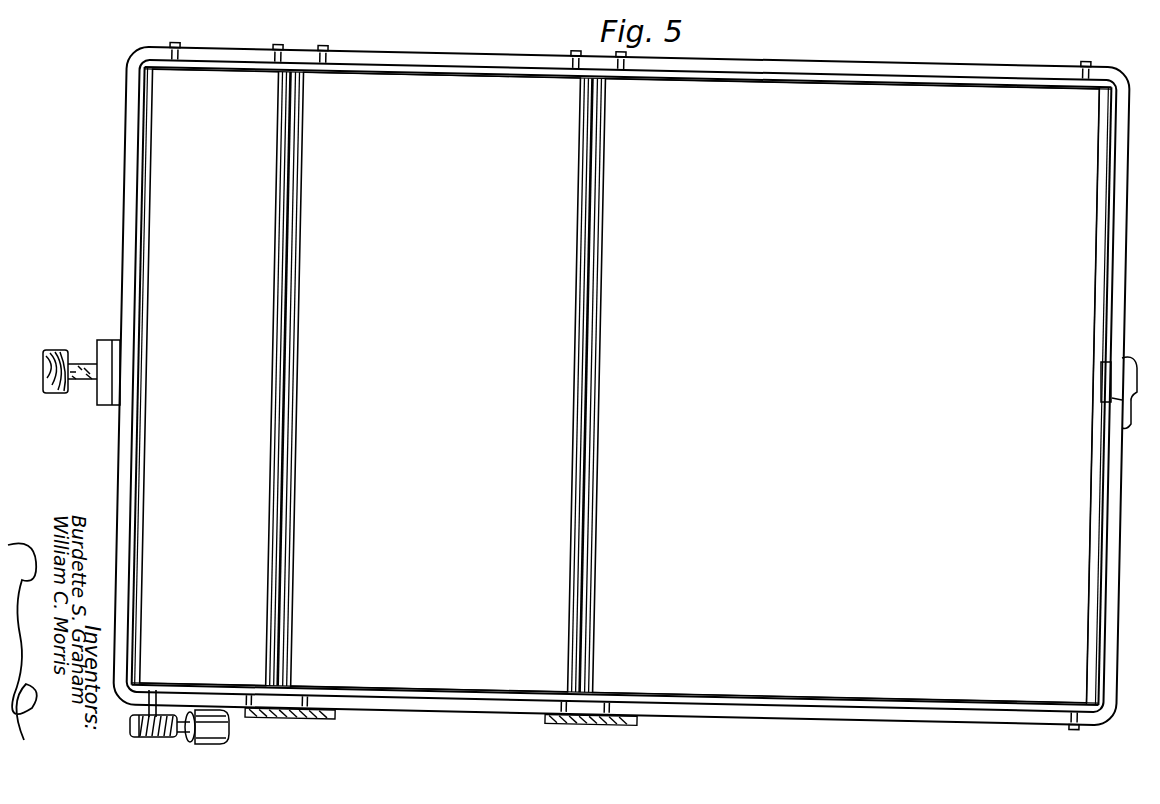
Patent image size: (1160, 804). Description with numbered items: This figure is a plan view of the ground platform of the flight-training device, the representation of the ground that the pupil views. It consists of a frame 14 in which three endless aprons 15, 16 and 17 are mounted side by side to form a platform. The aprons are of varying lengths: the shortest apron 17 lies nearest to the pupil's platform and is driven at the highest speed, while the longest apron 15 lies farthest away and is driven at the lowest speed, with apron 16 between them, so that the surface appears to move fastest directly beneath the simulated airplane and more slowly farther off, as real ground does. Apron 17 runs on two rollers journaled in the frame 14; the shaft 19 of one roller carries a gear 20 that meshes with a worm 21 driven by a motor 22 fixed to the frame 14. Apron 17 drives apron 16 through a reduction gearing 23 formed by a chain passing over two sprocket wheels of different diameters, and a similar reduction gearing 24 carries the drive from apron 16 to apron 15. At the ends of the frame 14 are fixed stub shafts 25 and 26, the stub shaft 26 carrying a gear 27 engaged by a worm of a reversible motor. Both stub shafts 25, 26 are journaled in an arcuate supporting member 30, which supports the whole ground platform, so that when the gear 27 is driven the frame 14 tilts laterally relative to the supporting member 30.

The frame 14 is at (812, 58).
The endless apron 15 is at (846, 391).
The endless apron 16 is at (436, 382).
The endless apron 17 is at (209, 377).
The shaft 19 is at (150, 712).
The gear 20 is at (153, 738).
The worm 21 is at (183, 737).
The motor 22 is at (216, 746).
The reduction gearing 23 is at (303, 719).
The reduction gearing 24 is at (597, 727).
The stub shaft 25 is at (1134, 357).
The stub shaft 26 is at (85, 368).
The gear 27 is at (58, 342).
The arcuate supporting member 30 is at (108, 400).